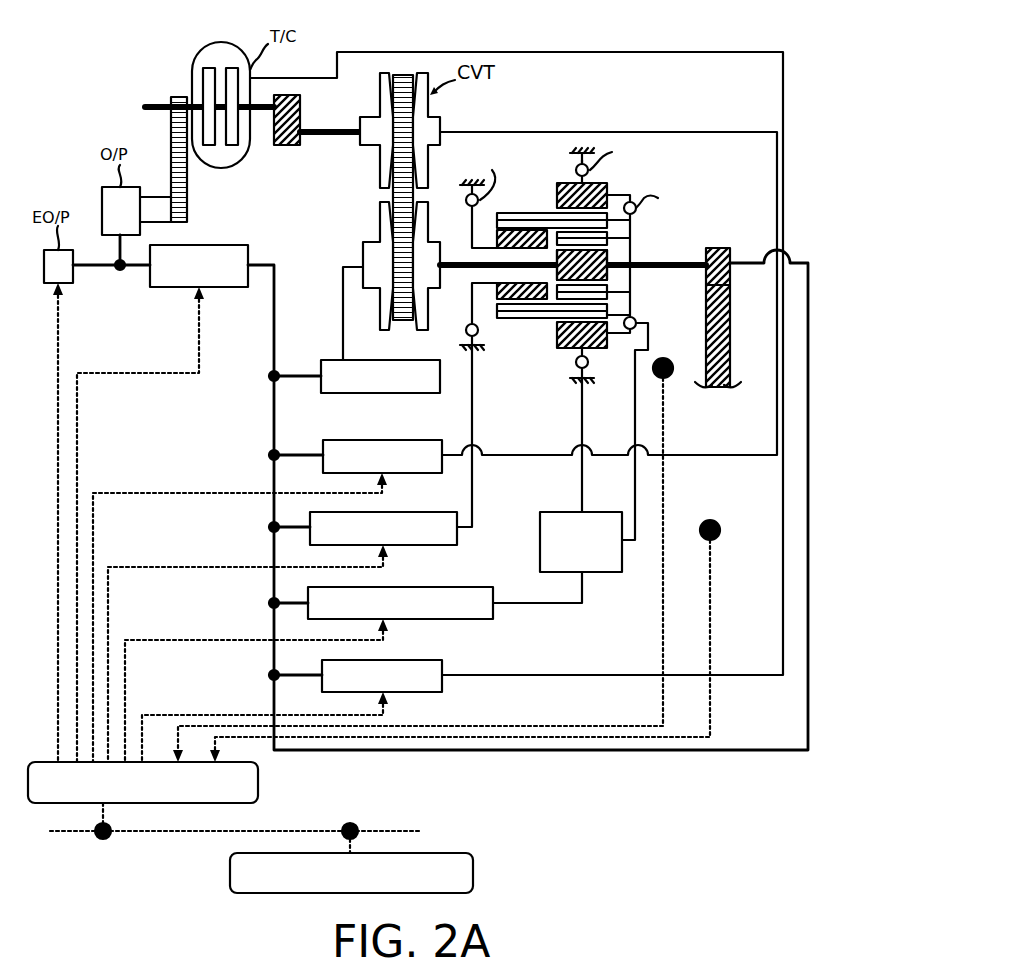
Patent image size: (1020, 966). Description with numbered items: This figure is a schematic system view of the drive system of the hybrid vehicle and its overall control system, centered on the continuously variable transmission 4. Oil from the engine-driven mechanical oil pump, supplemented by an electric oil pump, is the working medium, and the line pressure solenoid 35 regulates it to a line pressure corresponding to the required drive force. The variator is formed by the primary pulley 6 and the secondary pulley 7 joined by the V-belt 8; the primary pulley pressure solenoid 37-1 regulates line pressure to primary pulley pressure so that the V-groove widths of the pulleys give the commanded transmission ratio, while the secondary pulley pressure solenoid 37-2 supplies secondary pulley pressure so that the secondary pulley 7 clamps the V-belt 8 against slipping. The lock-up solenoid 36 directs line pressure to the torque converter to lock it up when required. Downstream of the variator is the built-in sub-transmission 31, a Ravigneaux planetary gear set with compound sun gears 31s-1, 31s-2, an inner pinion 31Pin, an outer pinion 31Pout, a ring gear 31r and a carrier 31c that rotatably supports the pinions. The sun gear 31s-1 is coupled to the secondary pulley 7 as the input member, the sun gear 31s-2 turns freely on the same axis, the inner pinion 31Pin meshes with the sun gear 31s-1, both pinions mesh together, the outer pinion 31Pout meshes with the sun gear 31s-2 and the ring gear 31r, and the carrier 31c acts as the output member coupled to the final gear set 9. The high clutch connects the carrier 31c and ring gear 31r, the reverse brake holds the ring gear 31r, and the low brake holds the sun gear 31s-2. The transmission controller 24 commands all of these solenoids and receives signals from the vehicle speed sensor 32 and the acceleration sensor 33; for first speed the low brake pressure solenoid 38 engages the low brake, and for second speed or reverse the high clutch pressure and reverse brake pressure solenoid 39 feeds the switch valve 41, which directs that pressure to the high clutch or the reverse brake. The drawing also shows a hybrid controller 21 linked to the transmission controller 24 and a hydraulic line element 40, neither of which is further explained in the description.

The continuously variable transmission 4 is at (703, 30).
The primary pulley 6 is at (440, 115).
The secondary pulley 7 is at (363, 250).
The V-belt 8 is at (393, 195).
The final gear set 9 is at (730, 272).
The hybrid controller 21 is at (230, 866).
The transmission controller 24 is at (262, 785).
The sub-transmission 31 is at (549, 342).
The ring gear 31r is at (610, 192).
The inner pinion 31Pin is at (607, 232).
The sun gear 31s-1 is at (600, 258).
The carrier 31c is at (632, 284).
The sun gear 31s-2 is at (497, 290).
The outer pinion 31Pout is at (515, 320).
The vehicle speed sensor 32 is at (663, 358).
The acceleration sensor 33 is at (718, 522).
The line pressure solenoid 35 is at (208, 245).
The lock-up solenoid 36 is at (430, 660).
The primary pulley pressure solenoid 37-1 is at (372, 440).
The secondary pulley pressure solenoid 37-2 is at (331, 360).
The low brake pressure solenoid 38 is at (420, 512).
The high clutch pressure and reverse brake pressure solenoid 39 is at (484, 587).
The hydraulic line 40 is at (757, 752).
The switch valve 41 is at (545, 512).